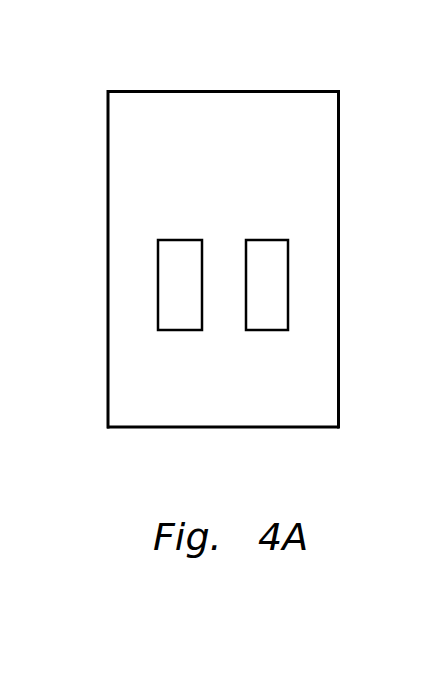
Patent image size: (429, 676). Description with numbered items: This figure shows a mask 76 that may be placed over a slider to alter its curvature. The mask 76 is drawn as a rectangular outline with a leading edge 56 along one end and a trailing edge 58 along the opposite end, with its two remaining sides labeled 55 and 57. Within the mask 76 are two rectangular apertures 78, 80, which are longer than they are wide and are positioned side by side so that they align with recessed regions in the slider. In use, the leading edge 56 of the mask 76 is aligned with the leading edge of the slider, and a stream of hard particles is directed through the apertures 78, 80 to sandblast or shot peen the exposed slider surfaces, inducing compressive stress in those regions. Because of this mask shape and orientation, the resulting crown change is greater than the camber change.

The mask 76 is at (224, 262).
The left edge 55 is at (107, 278).
The leading edge 56 is at (300, 428).
The right edge 57 is at (340, 277).
The trailing edge 58 is at (300, 91).
The rectangular aperture 78 is at (177, 263).
The rectangular aperture 80 is at (264, 263).